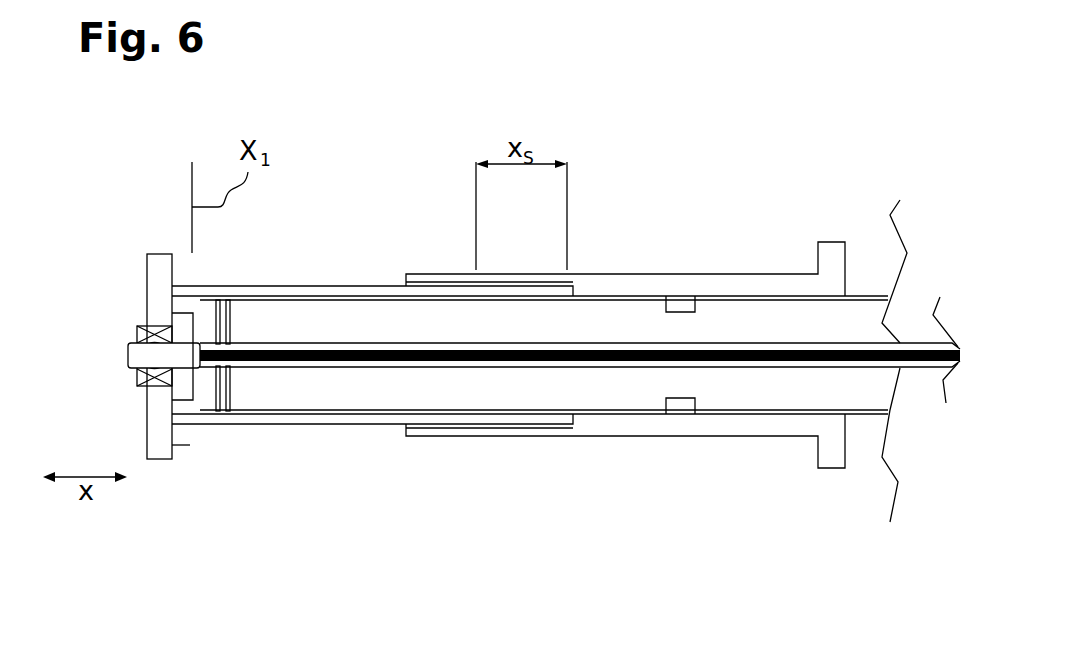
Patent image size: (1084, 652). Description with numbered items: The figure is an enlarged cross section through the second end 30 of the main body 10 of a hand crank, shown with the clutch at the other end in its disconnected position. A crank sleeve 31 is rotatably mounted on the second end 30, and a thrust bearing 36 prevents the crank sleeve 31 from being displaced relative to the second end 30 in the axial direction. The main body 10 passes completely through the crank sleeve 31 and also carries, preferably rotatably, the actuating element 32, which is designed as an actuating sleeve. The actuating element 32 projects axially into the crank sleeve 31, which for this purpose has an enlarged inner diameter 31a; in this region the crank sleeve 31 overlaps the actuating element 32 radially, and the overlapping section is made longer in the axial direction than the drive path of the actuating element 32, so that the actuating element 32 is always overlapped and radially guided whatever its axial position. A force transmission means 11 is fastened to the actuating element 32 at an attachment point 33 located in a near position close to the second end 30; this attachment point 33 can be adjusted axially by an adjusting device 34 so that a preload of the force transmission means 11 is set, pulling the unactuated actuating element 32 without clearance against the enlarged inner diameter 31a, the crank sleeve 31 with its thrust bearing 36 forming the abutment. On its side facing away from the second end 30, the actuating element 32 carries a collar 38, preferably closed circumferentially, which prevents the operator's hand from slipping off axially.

The main body 10 is at (872, 440).
The force transmission means 11 is at (918, 343).
The second end 30 is at (244, 272).
The crank sleeve 31 is at (767, 273).
The enlarged inner diameter 31a is at (588, 290).
The actuating element 32 is at (377, 425).
The attachment point 33 is at (195, 368).
The adjusting device 34 is at (147, 342).
The thrust bearing 36 is at (672, 302).
The collar 38 is at (190, 445).